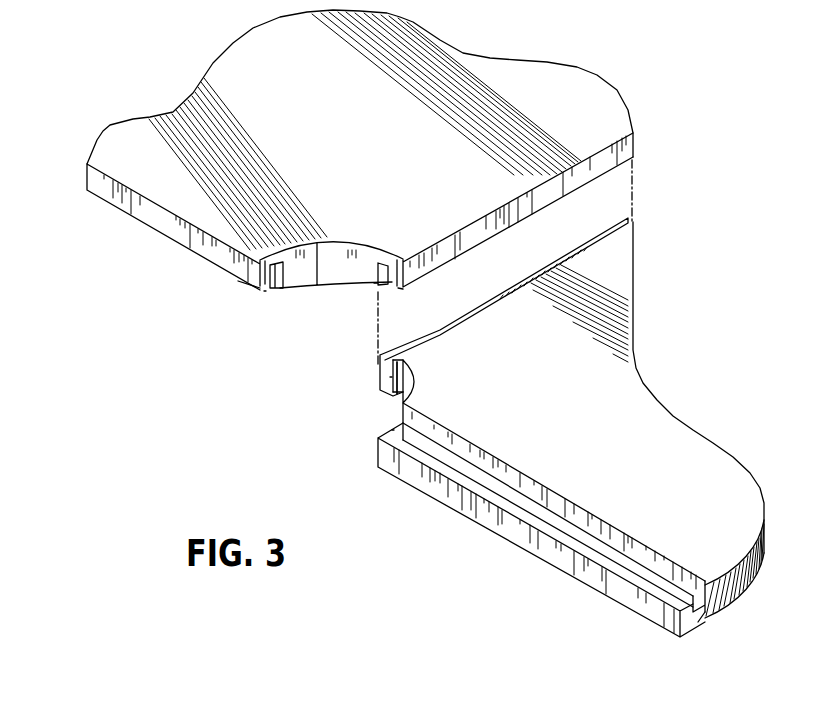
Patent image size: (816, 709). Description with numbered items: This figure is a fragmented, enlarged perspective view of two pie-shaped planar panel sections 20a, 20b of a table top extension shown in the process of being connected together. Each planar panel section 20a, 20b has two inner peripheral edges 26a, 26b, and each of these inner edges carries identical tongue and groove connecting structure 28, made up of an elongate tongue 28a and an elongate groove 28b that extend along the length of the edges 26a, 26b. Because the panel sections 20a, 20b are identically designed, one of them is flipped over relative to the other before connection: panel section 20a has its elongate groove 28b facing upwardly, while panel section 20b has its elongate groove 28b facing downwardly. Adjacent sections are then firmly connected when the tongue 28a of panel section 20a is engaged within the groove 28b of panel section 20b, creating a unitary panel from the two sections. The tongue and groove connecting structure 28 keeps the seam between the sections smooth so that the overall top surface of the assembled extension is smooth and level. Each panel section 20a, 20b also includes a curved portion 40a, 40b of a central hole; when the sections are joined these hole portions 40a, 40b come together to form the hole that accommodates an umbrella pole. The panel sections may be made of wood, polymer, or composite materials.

The planar panel section 20a is at (372, 120).
The planar panel section 20b is at (620, 420).
The inner peripheral edge 26a is at (97, 179).
The inner peripheral edge 26b is at (624, 143).
The tongue and groove connecting structure 28 is at (265, 290).
The elongate tongue 28a is at (238, 281).
The elongate groove 28b is at (377, 263).
The hole portion 40a is at (330, 241).
The hole portion 40b is at (416, 380).